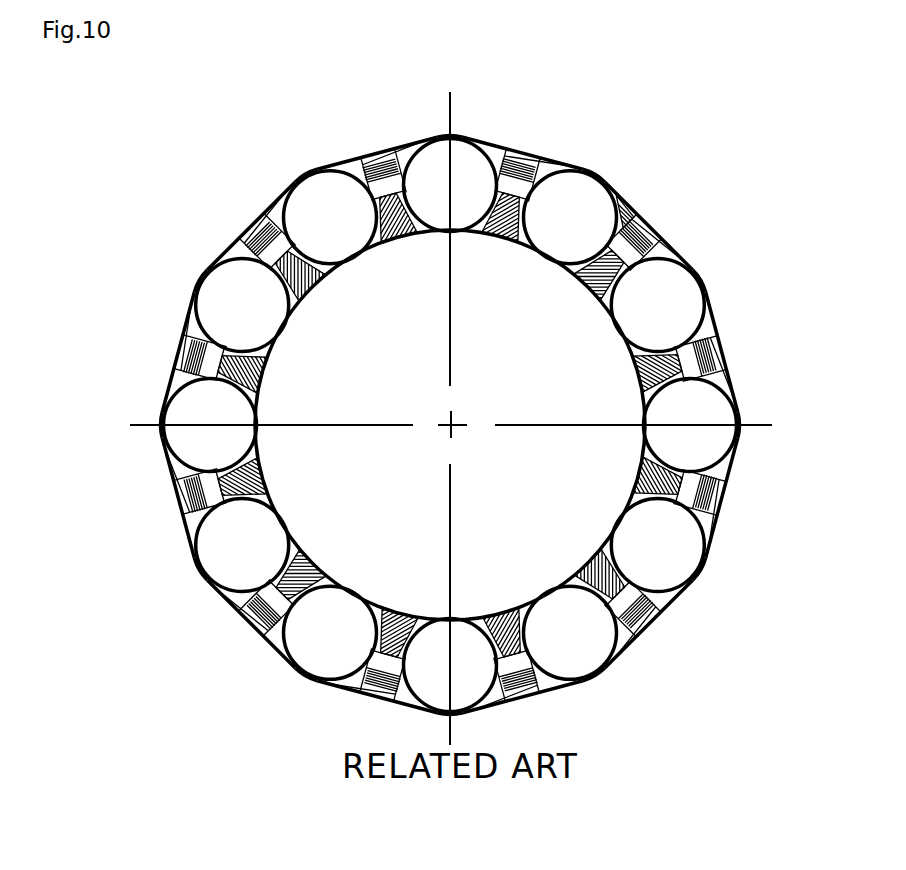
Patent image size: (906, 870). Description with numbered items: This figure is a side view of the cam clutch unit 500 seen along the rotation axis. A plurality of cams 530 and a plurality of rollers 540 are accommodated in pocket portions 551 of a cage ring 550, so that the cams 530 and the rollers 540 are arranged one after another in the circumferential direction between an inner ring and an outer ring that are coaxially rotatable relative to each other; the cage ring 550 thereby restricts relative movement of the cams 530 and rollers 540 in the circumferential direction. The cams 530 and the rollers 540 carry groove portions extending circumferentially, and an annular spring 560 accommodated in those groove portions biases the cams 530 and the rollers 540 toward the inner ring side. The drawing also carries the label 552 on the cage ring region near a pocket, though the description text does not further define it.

The cam clutch unit 500 is at (213, 126).
The cams 530 is at (437, 178).
The rollers 540 is at (583, 197).
The cage ring 550 is at (243, 228).
The pocket portions 551 is at (271, 191).
The recess 552 is at (632, 205).
The annular spring 560 is at (523, 150).